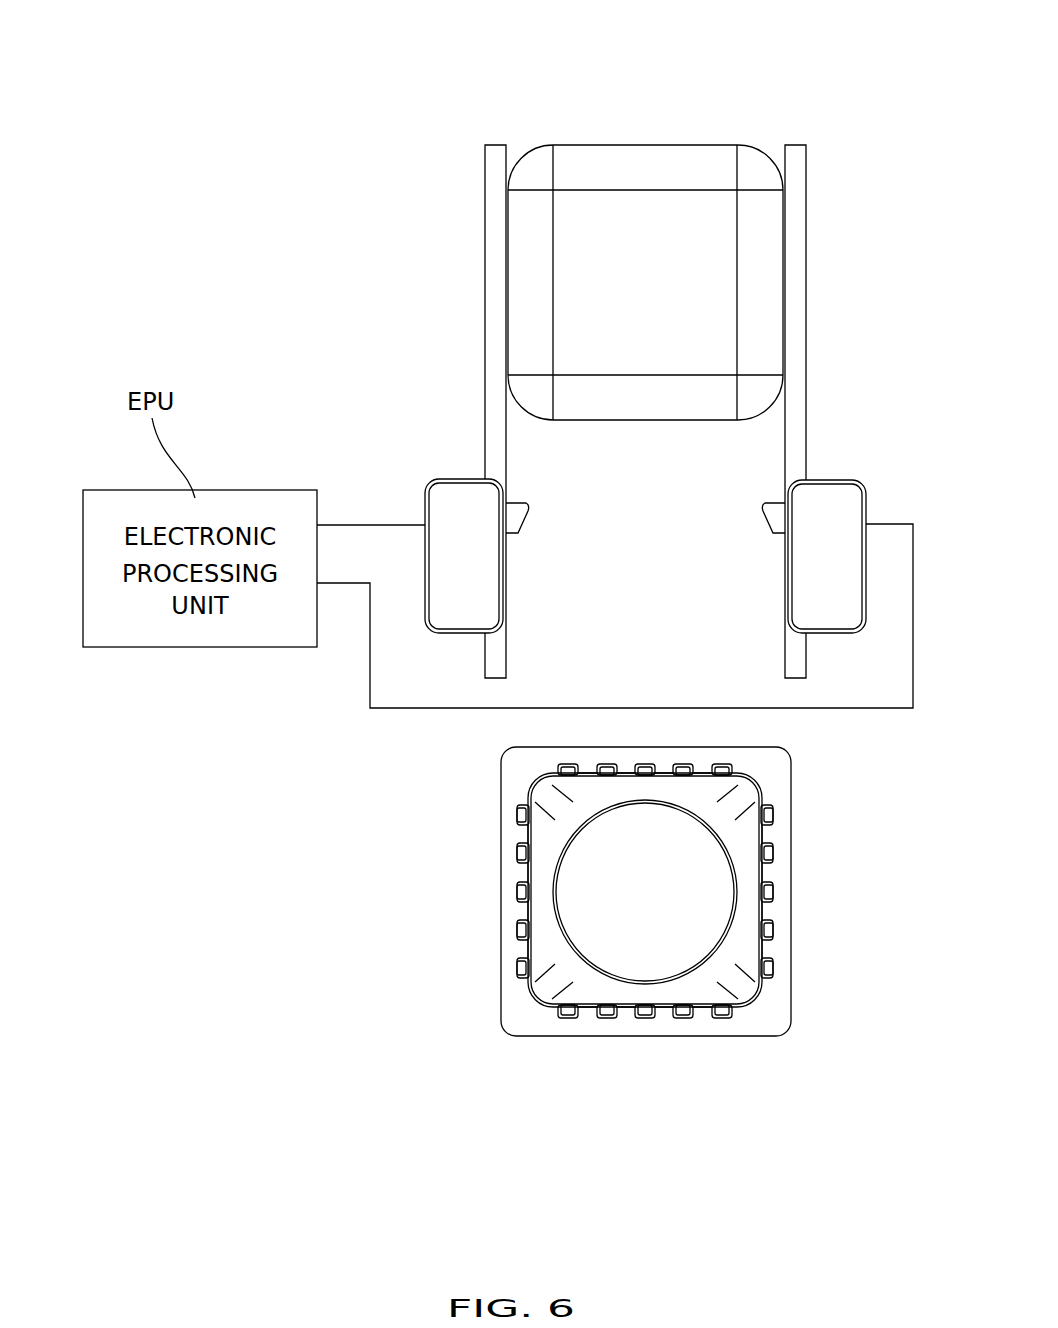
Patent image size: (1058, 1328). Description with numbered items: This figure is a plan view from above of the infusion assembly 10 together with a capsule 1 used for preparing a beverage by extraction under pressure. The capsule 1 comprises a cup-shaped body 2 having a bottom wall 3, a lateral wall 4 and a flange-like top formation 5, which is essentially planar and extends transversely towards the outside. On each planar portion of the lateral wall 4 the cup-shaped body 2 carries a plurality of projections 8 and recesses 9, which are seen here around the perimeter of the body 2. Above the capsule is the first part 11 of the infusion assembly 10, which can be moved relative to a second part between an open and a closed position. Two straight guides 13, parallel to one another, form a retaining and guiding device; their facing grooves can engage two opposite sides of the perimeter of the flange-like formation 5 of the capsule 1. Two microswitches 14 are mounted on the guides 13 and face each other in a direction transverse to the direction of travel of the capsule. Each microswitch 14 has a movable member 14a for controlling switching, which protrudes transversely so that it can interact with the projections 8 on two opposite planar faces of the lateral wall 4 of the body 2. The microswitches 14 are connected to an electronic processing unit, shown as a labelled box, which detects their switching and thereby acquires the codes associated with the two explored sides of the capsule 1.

The capsule 1 is at (440, 1024).
The cup-shaped body 2 is at (772, 998).
The bottom wall 3 is at (713, 884).
The lateral wall 4 is at (625, 990).
The flange-like top formation 5 is at (515, 768).
The projections 8 is at (568, 764).
The recesses 9 is at (588, 772).
The infusion assembly 10 is at (758, 105).
The first part 11 is at (618, 222).
The straight guides 13 is at (482, 238).
The microswitches 14 is at (452, 498).
The movable member 14a is at (517, 518).